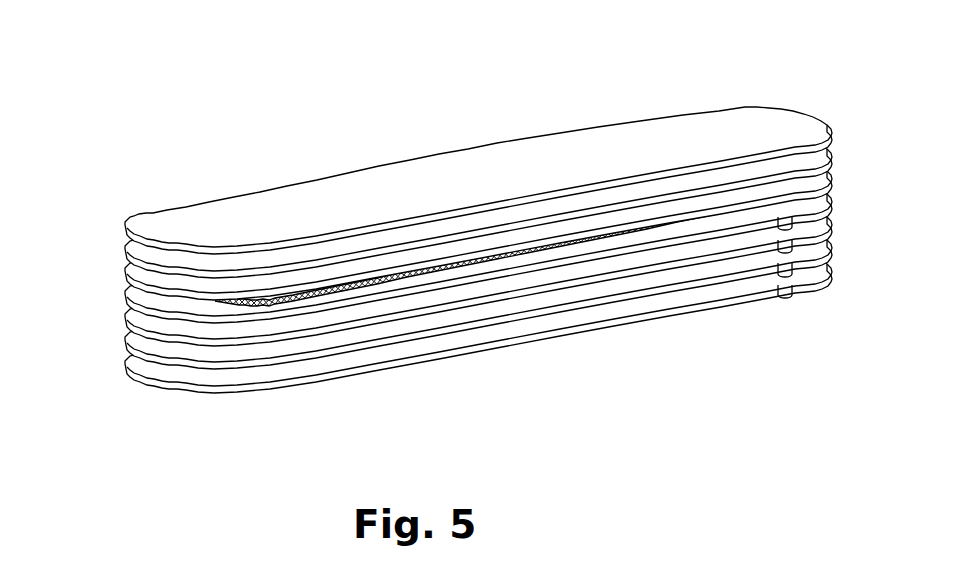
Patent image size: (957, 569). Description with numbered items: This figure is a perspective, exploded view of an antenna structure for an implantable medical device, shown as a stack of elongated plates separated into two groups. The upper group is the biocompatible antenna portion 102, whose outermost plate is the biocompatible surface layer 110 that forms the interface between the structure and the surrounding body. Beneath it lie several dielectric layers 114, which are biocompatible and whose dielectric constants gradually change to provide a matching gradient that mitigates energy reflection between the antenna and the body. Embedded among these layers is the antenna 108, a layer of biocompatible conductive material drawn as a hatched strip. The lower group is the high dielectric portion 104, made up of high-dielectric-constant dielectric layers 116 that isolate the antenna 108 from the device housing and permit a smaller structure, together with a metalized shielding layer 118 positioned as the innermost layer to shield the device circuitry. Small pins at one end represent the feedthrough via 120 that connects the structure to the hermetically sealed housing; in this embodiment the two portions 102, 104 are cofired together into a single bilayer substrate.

The biocompatible antenna portion 102 is at (463, 232).
The high dielectric portion 104 is at (463, 298).
The antenna 108 is at (417, 279).
The biocompatible surface layer 110 is at (746, 118).
The dielectric layers 114 is at (432, 274).
The dielectric layer 116 is at (128, 340).
The shielding layer 118 is at (130, 365).
The feedthrough via 120 is at (793, 270).